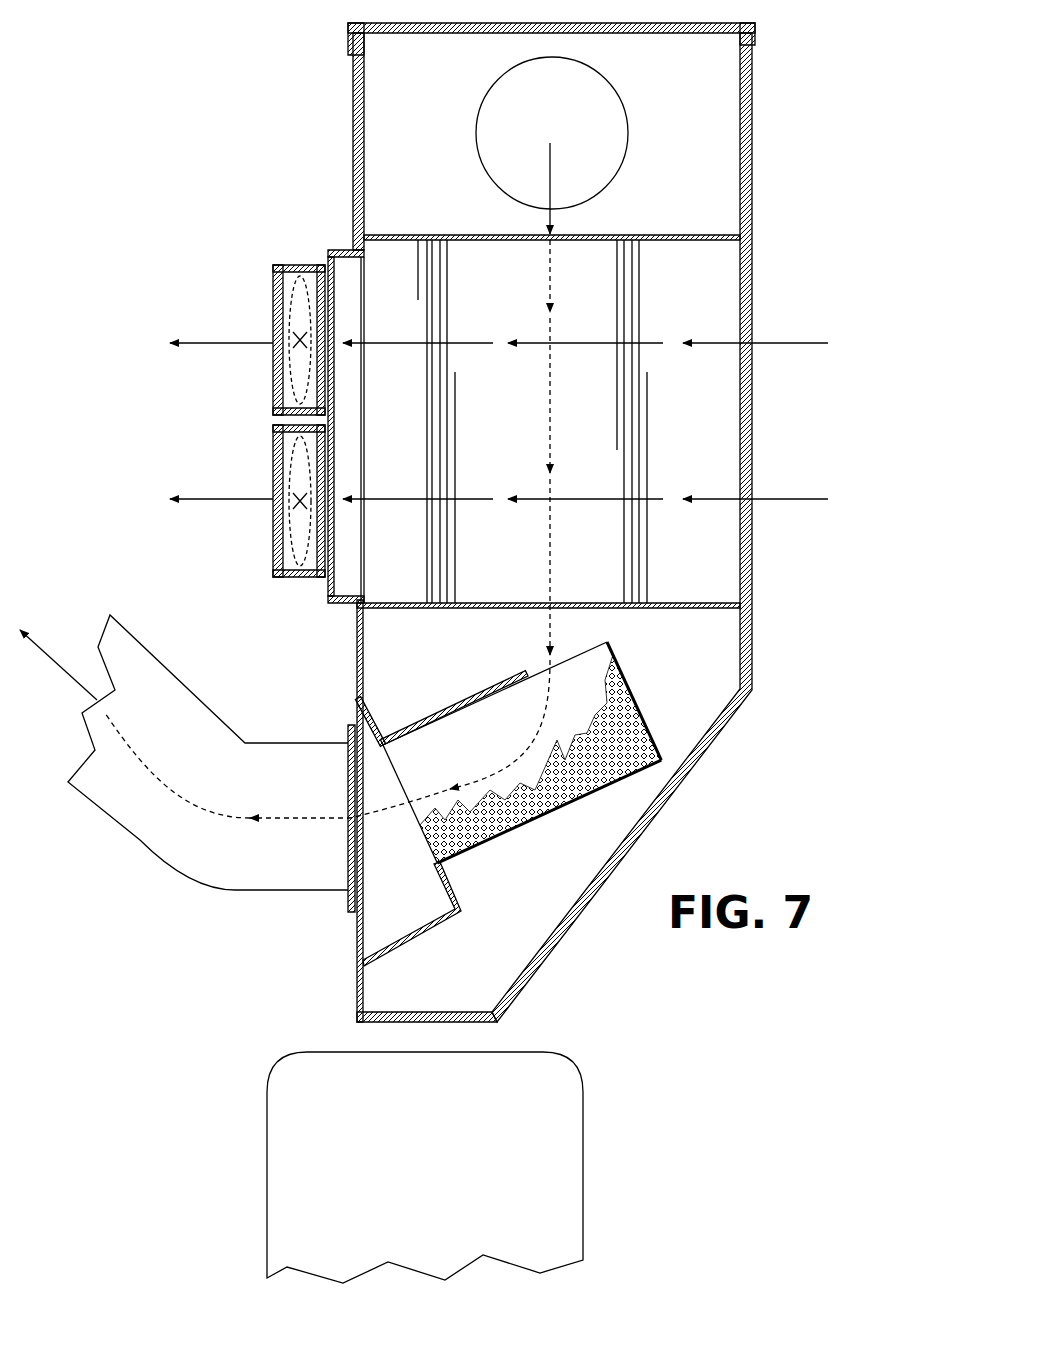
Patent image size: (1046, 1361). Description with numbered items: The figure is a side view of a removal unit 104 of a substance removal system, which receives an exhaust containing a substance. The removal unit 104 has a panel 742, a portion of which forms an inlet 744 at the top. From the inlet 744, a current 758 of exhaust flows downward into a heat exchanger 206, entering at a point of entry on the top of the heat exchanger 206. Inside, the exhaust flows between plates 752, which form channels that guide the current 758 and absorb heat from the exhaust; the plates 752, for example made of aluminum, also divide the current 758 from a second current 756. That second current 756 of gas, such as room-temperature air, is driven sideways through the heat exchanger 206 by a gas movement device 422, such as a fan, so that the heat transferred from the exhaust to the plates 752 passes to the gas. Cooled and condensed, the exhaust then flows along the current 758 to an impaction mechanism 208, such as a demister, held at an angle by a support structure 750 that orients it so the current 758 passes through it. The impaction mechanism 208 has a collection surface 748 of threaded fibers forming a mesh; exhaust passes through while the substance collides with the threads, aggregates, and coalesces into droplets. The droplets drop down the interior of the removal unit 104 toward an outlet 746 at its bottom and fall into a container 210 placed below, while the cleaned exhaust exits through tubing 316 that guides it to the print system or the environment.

The removal unit 104 is at (519, 522).
The heat exchanger 206 is at (456, 234).
The impaction mechanism 208 is at (630, 681).
The container 210 is at (584, 1175).
The tubing 316 is at (182, 682).
The gas movement device 422 is at (272, 302).
The panel 742 is at (697, 160).
The inlet 744 is at (598, 72).
The outlet 746 is at (432, 1010).
The collection surface 748 is at (550, 741).
The support structure 750 is at (400, 733).
The plate 752 is at (690, 262).
The second current 756 is at (205, 345).
The current 758 is at (548, 148).